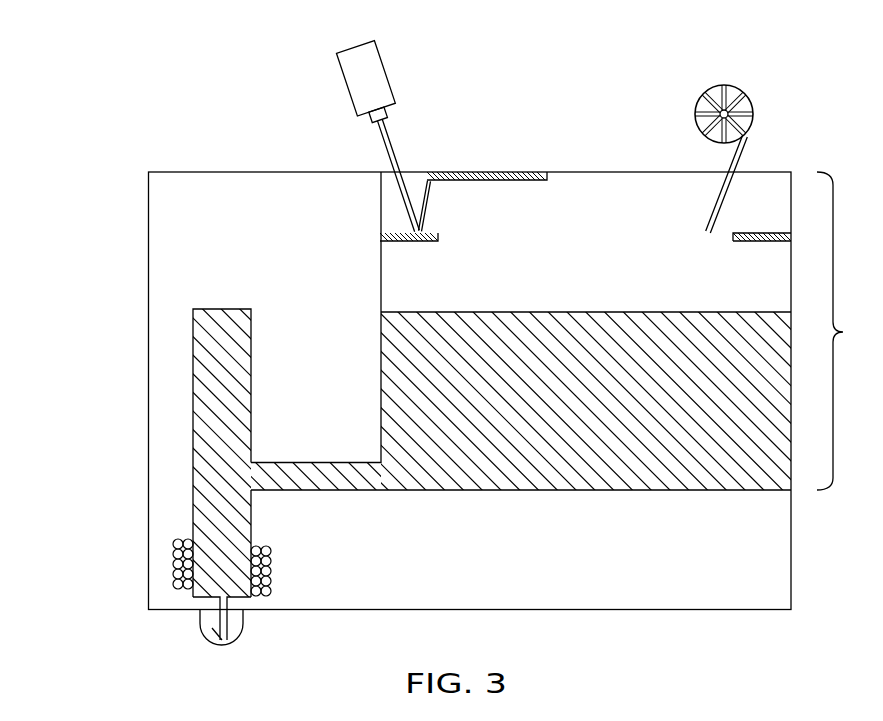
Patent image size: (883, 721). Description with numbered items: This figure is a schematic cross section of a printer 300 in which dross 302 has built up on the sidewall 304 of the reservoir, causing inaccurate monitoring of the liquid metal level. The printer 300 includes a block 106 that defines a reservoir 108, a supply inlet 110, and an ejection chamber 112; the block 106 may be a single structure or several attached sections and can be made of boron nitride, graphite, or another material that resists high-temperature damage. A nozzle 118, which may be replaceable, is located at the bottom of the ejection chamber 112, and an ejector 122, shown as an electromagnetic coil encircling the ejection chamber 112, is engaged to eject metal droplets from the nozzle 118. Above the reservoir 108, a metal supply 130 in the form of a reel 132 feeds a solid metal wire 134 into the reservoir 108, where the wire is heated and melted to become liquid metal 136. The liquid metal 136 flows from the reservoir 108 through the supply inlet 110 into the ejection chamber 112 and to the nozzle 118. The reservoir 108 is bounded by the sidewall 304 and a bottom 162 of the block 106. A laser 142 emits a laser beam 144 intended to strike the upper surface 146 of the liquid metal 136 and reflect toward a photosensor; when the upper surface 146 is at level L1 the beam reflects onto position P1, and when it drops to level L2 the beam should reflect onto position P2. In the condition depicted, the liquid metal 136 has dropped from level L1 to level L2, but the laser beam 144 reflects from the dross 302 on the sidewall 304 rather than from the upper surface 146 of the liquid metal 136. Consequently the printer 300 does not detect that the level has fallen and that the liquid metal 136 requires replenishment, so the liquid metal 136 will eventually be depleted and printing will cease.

The printer 300 is at (95, 117).
The block 106 is at (172, 231).
The reservoir 108 is at (850, 331).
The supply inlet 110 is at (313, 462).
The ejection chamber 112 is at (193, 497).
The nozzle 118 is at (205, 624).
The ejector 122 is at (173, 560).
The metal supply 130 is at (729, 129).
The reel 132 is at (752, 107).
The metal wire 134 is at (738, 157).
The liquid metal 136 is at (480, 453).
The laser 142 is at (343, 70).
The laser beam 144 is at (386, 152).
The upper surface 146 is at (586, 300).
The bottom 162 is at (625, 496).
The dross 302 is at (438, 238).
The sidewall 304 is at (383, 292).
The level L1 is at (370, 232).
The level L2 is at (378, 312).
The position P1 is at (440, 167).
The position P2 is at (483, 167).